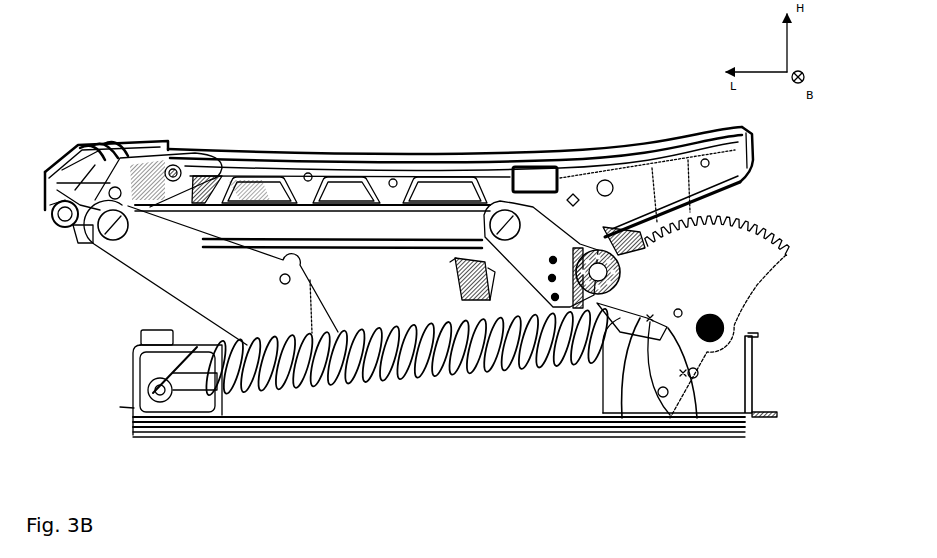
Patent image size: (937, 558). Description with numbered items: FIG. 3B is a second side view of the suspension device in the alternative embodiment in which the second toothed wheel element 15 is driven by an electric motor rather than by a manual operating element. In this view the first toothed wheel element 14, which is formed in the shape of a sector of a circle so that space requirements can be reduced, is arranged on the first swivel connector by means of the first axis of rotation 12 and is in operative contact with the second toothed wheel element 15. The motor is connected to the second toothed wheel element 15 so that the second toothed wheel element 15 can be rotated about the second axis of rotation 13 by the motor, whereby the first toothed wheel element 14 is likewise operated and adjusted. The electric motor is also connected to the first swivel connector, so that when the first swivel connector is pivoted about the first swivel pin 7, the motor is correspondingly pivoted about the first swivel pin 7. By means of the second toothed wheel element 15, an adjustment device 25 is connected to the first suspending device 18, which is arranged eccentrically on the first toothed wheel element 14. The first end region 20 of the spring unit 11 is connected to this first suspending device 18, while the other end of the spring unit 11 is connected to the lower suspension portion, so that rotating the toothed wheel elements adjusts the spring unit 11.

The first swivel pin 7 is at (665, 397).
The spring unit 11 is at (447, 375).
The first axis of rotation 12 is at (724, 325).
The second axis of rotation 13 is at (589, 252).
The first toothed wheel element 14 is at (772, 262).
The second toothed wheel element 15 is at (578, 252).
The first suspending device 18 is at (690, 380).
The first end region 20 is at (640, 322).
The adjustment device 25 is at (821, 184).